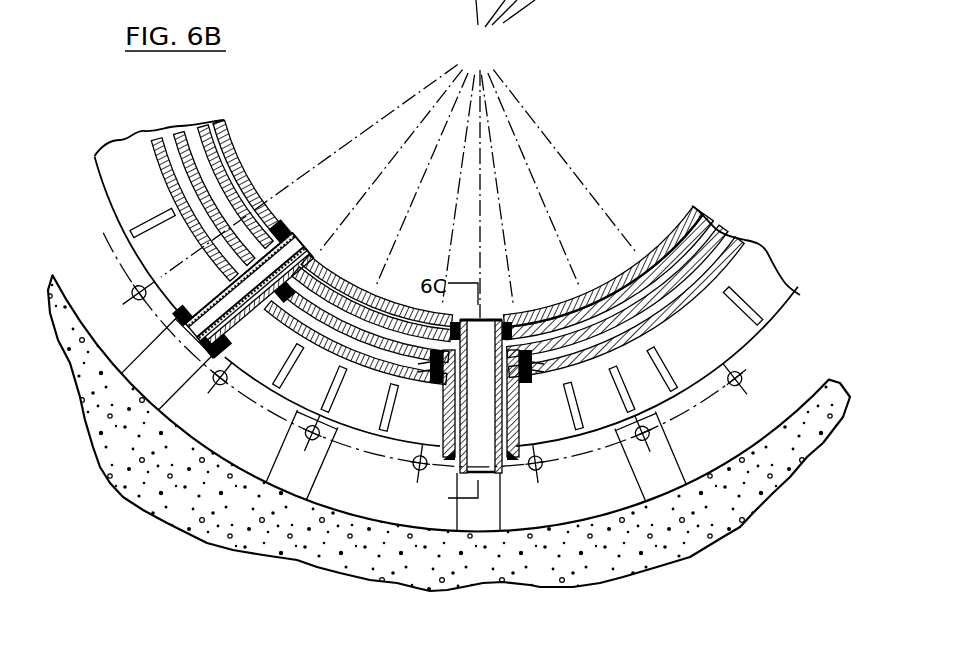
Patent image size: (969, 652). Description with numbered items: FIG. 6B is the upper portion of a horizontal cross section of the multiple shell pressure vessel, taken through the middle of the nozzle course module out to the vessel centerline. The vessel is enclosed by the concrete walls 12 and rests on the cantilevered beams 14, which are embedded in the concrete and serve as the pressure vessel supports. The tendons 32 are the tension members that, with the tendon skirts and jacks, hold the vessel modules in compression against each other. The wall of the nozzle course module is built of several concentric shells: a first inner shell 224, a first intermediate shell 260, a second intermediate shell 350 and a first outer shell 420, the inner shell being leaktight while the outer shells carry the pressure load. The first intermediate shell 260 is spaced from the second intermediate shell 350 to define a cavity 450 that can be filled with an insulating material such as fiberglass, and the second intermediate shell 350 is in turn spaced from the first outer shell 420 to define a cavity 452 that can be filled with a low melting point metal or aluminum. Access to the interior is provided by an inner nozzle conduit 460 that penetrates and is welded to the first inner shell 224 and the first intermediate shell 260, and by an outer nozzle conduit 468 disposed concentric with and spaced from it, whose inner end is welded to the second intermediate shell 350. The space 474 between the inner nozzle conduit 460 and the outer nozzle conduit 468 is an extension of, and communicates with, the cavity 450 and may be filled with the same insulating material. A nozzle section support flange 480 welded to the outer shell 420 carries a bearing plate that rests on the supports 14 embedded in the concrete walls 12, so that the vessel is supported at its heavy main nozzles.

The concrete walls 12 is at (208, 498).
The cantilevered beams 14 is at (167, 397).
The tension members or tendons 32 is at (135, 292).
The first inner shell 224 is at (698, 210).
The first intermediate shell 260 is at (722, 203).
The second intermediate shell 350 is at (737, 232).
The first outer shell 420 is at (755, 246).
The cavity 450 is at (728, 222).
The cavity 452 is at (746, 246).
The inner nozzle conduit 460 is at (290, 246).
The outer nozzle conduit 468 is at (234, 330).
The cavity or space 474 is at (226, 349).
The nozzle section support flange 480 is at (166, 220).